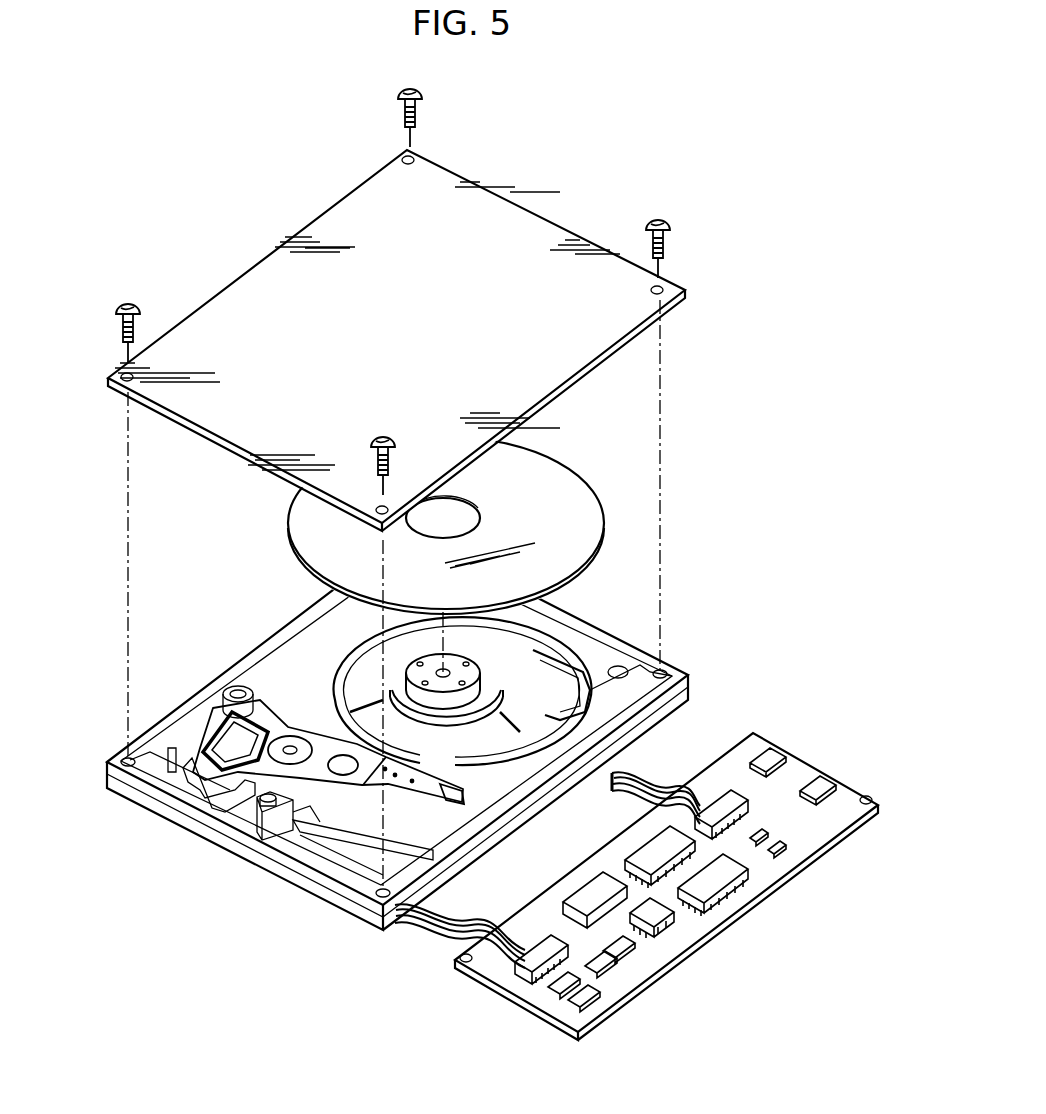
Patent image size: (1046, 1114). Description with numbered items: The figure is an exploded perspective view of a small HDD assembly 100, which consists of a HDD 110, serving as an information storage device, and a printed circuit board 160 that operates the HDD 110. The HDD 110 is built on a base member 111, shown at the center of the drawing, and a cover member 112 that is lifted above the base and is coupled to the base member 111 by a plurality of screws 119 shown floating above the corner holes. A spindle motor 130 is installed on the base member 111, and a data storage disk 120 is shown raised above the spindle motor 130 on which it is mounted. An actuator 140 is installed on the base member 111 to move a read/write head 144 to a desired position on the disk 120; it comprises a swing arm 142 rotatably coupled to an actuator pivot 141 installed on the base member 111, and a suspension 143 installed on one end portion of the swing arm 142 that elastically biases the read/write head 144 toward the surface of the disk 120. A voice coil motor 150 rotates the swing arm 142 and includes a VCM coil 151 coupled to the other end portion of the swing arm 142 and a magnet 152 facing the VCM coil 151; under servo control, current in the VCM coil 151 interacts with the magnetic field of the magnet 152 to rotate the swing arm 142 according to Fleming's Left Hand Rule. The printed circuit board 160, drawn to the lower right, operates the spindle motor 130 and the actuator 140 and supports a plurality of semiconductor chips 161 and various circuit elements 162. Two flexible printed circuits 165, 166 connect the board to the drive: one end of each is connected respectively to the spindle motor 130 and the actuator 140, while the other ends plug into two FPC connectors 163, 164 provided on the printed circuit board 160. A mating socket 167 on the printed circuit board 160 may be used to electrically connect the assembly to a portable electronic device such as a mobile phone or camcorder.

The HDD assembly 100 is at (680, 482).
The HDD 110 is at (120, 578).
The base member 111 is at (668, 665).
The cover member 112 is at (520, 222).
The screws 119 is at (122, 305).
The data storage disk 120 is at (545, 470).
The spindle motor 130 is at (408, 663).
The actuator 140 is at (300, 735).
The actuator pivot 141 is at (257, 700).
The swing arm 142 is at (290, 746).
The suspension 143 is at (380, 782).
The read/write head 144 is at (455, 803).
The voice coil motor 150 is at (202, 722).
The VCM coil 151 is at (222, 730).
The magnet 152 is at (220, 800).
The printed circuit board 160 is at (666, 870).
The semiconductor chips 161 is at (665, 842).
The circuit elements 162 is at (782, 848).
The FPC connector 163 is at (726, 800).
The FPC connector 164 is at (530, 980).
The flexible printed circuit 165 is at (635, 780).
The flexible printed circuit 166 is at (435, 933).
The mating socket 167 is at (597, 897).